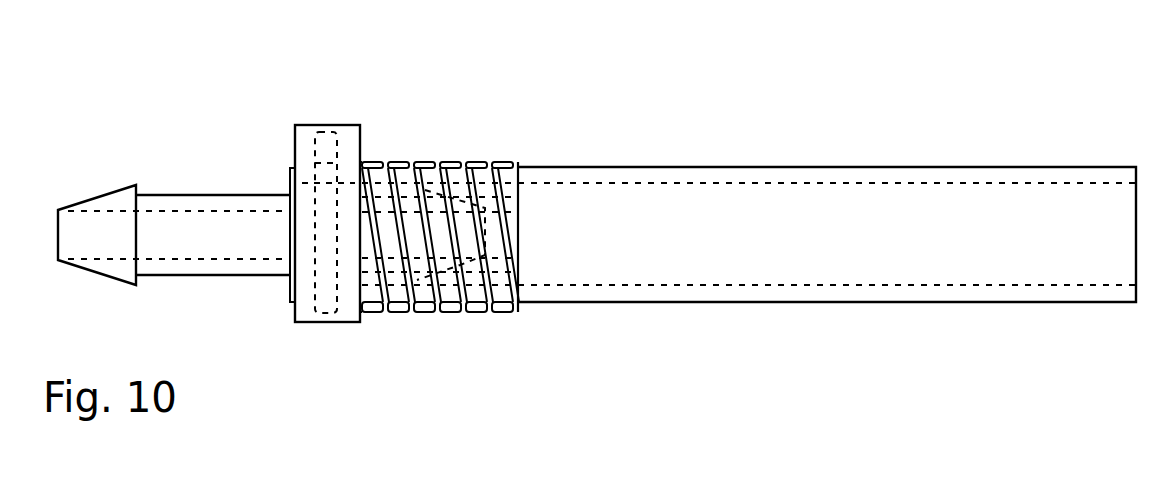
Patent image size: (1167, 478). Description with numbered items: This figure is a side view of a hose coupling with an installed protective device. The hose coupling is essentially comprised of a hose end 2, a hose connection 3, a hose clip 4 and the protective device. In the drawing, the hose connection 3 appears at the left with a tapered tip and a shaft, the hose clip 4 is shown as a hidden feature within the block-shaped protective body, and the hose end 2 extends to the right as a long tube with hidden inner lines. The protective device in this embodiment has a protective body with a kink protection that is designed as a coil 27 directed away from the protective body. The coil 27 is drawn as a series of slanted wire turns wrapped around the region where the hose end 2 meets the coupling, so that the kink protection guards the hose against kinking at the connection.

The hose end 2 is at (533, 272).
The hose connection 3 is at (207, 227).
The hose clip 4 is at (330, 235).
The coil 27 is at (483, 200).